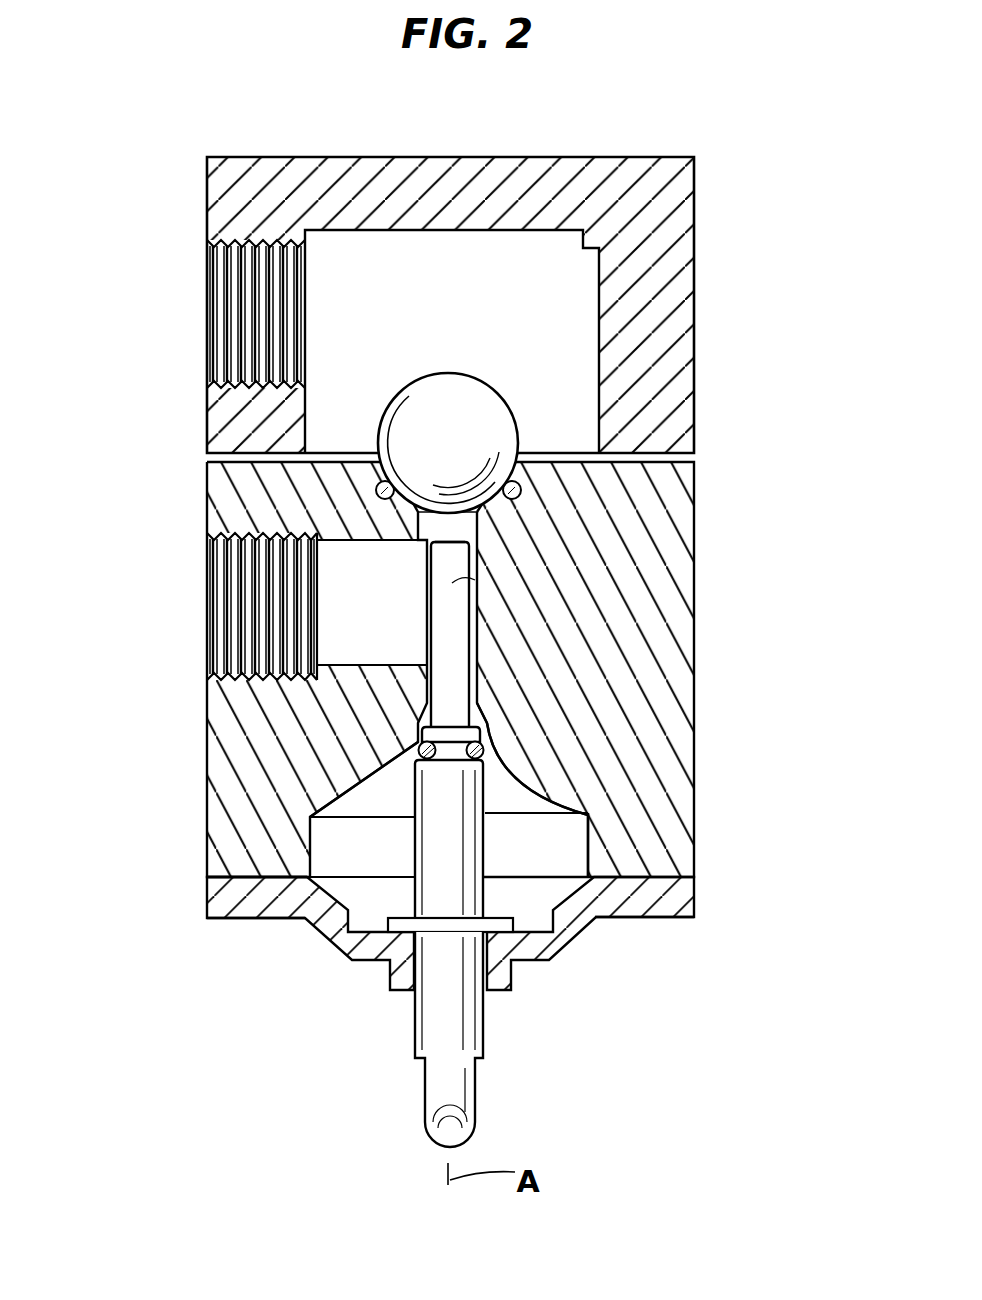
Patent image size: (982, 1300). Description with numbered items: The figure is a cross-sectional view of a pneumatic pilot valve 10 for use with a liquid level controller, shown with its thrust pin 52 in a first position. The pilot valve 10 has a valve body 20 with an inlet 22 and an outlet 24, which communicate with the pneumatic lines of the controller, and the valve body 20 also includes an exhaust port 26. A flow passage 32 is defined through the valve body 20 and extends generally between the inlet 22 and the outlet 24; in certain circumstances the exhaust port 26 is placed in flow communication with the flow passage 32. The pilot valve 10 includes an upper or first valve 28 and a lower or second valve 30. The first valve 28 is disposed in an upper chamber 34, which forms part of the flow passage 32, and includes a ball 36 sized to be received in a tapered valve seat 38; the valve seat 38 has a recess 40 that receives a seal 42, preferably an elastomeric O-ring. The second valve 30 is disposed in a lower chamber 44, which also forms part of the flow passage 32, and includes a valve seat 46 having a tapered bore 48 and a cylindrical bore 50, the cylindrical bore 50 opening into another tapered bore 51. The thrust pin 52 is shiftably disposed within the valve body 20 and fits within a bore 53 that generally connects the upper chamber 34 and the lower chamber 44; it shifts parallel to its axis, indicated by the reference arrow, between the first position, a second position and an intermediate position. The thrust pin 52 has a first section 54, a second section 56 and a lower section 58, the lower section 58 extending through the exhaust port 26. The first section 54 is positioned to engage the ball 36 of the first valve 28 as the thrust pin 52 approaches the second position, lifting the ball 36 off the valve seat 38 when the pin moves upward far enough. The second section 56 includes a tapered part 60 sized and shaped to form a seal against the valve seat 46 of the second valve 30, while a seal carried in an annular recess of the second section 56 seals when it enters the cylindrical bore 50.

The pilot valve 10 is at (697, 298).
The valve body 20 is at (697, 640).
The inlet 22 is at (205, 303).
The outlet 24 is at (205, 634).
The exhaust port 26 is at (488, 992).
The first valve 28 is at (528, 431).
The second valve 30 is at (415, 744).
The flow passage 32 is at (443, 532).
The upper chamber 34 is at (545, 272).
The ball 36 is at (470, 408).
The tapered valve seat 38 is at (522, 473).
The recess 40 is at (522, 498).
The seal 42 is at (522, 490).
The lower chamber 44 is at (557, 827).
The valve seat 46 is at (497, 727).
The tapered bore 48 is at (495, 722).
The cylindrical bore 50 is at (427, 748).
The tapered bore 51 is at (587, 813).
The thrust pin 52 is at (440, 877).
The bore 53 is at (455, 578).
The first section 54 is at (445, 552).
The second section 56 is at (452, 747).
The lower section 58 is at (440, 1022).
The tapered part 60 is at (450, 723).